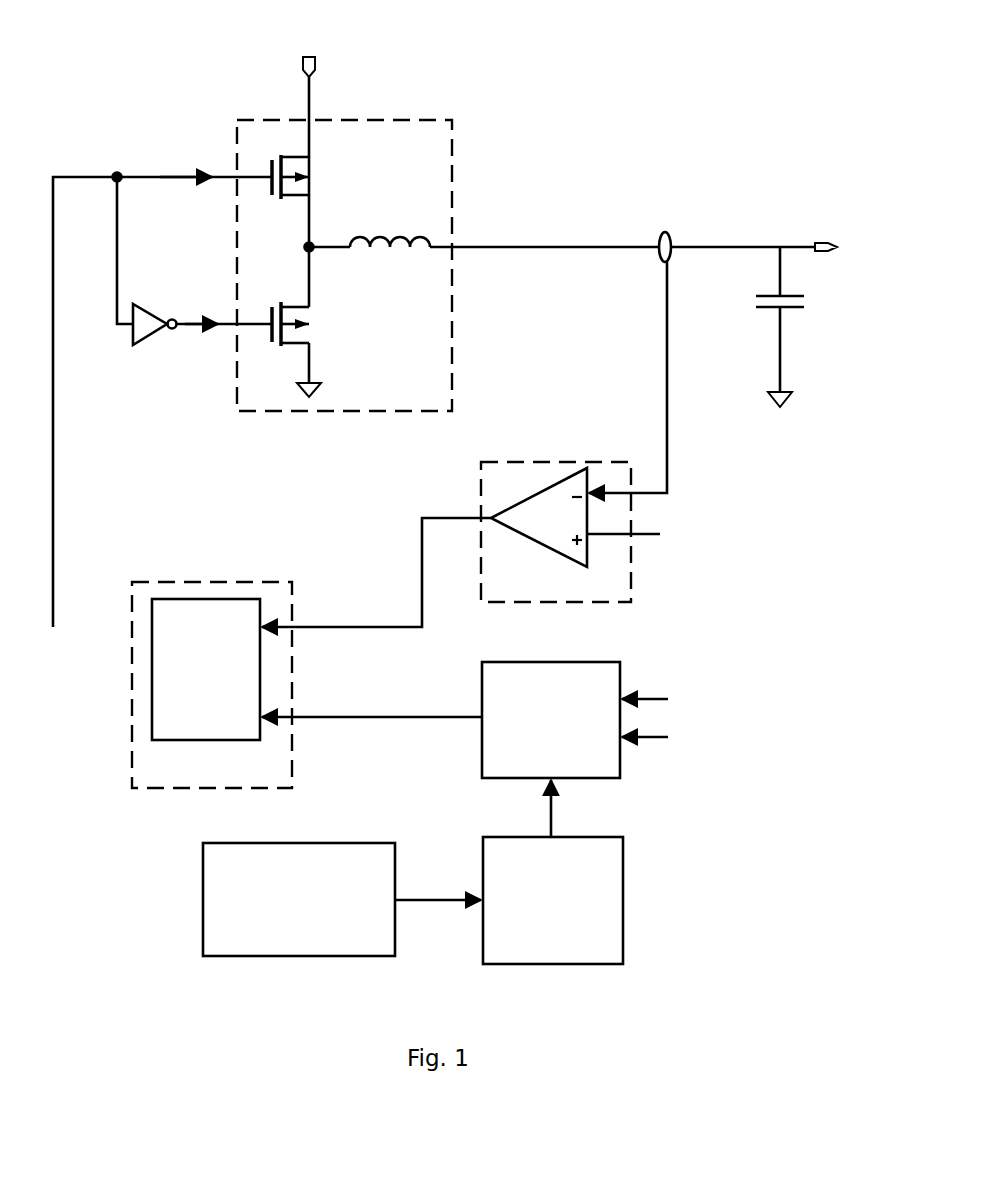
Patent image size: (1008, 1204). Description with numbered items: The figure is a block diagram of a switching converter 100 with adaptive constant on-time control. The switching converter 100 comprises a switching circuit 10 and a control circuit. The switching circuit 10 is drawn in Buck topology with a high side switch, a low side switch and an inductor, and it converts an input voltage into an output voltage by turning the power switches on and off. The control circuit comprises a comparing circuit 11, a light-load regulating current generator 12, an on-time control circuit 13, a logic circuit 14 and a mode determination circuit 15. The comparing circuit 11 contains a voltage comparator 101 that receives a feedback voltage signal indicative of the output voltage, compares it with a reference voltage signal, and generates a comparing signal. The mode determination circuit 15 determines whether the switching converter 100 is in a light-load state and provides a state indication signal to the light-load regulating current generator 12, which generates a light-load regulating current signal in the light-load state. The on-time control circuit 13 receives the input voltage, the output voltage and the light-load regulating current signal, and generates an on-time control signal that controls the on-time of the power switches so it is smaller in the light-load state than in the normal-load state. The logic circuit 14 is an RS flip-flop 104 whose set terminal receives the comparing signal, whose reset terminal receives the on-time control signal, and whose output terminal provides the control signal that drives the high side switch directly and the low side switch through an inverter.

The switching converter 100 is at (556, 34).
The switching circuit 10 is at (452, 337).
The comparing circuit 11 is at (536, 462).
The voltage comparator 101 is at (572, 565).
The logic circuit 14 is at (210, 582).
The RS flip-flop 104 is at (213, 742).
The on-time control circuit 13 is at (620, 681).
The light-load regulating current generator 12 is at (623, 898).
The mode determination circuit 15 is at (318, 843).